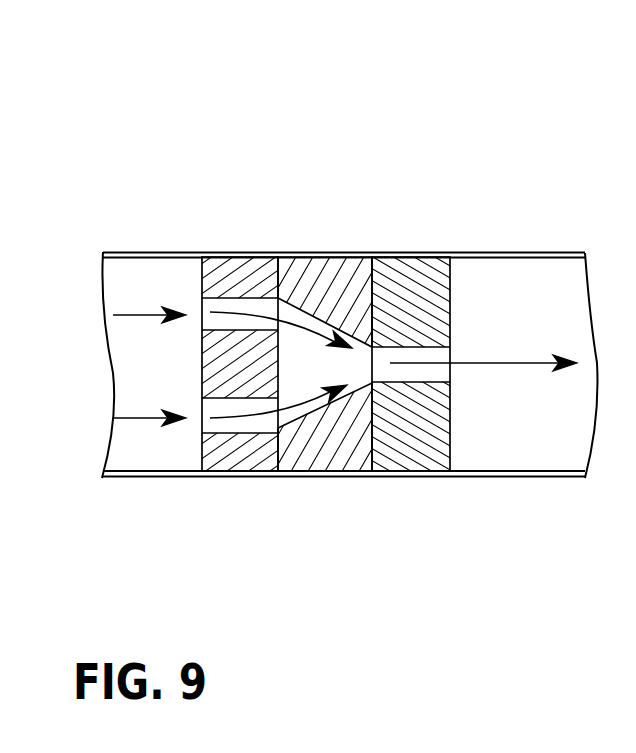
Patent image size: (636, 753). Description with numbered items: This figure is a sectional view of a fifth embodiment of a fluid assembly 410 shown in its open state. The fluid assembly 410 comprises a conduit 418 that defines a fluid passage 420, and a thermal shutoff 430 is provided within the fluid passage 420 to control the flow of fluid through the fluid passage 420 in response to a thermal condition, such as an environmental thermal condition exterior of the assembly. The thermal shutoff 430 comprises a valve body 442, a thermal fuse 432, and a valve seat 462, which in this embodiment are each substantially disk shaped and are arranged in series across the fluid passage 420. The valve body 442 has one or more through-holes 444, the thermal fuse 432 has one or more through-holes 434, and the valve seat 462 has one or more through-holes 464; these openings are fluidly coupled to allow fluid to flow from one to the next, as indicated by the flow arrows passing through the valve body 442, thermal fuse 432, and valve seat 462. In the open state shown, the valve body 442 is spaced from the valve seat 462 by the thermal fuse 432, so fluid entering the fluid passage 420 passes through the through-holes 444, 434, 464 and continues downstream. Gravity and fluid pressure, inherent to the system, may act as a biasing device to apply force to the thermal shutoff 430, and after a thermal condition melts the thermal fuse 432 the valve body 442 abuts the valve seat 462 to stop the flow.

The fluid assembly 410 is at (495, 138).
The conduit 418 is at (487, 252).
The fluid passage 420 is at (157, 265).
The thermal shutoff 430 is at (458, 562).
The valve body 442 is at (237, 268).
The through-holes 444 is at (260, 422).
The thermal fuse 432 is at (325, 275).
The through-holes 434 is at (355, 377).
The valve seat 462 is at (412, 272).
The through-holes 464 is at (415, 373).